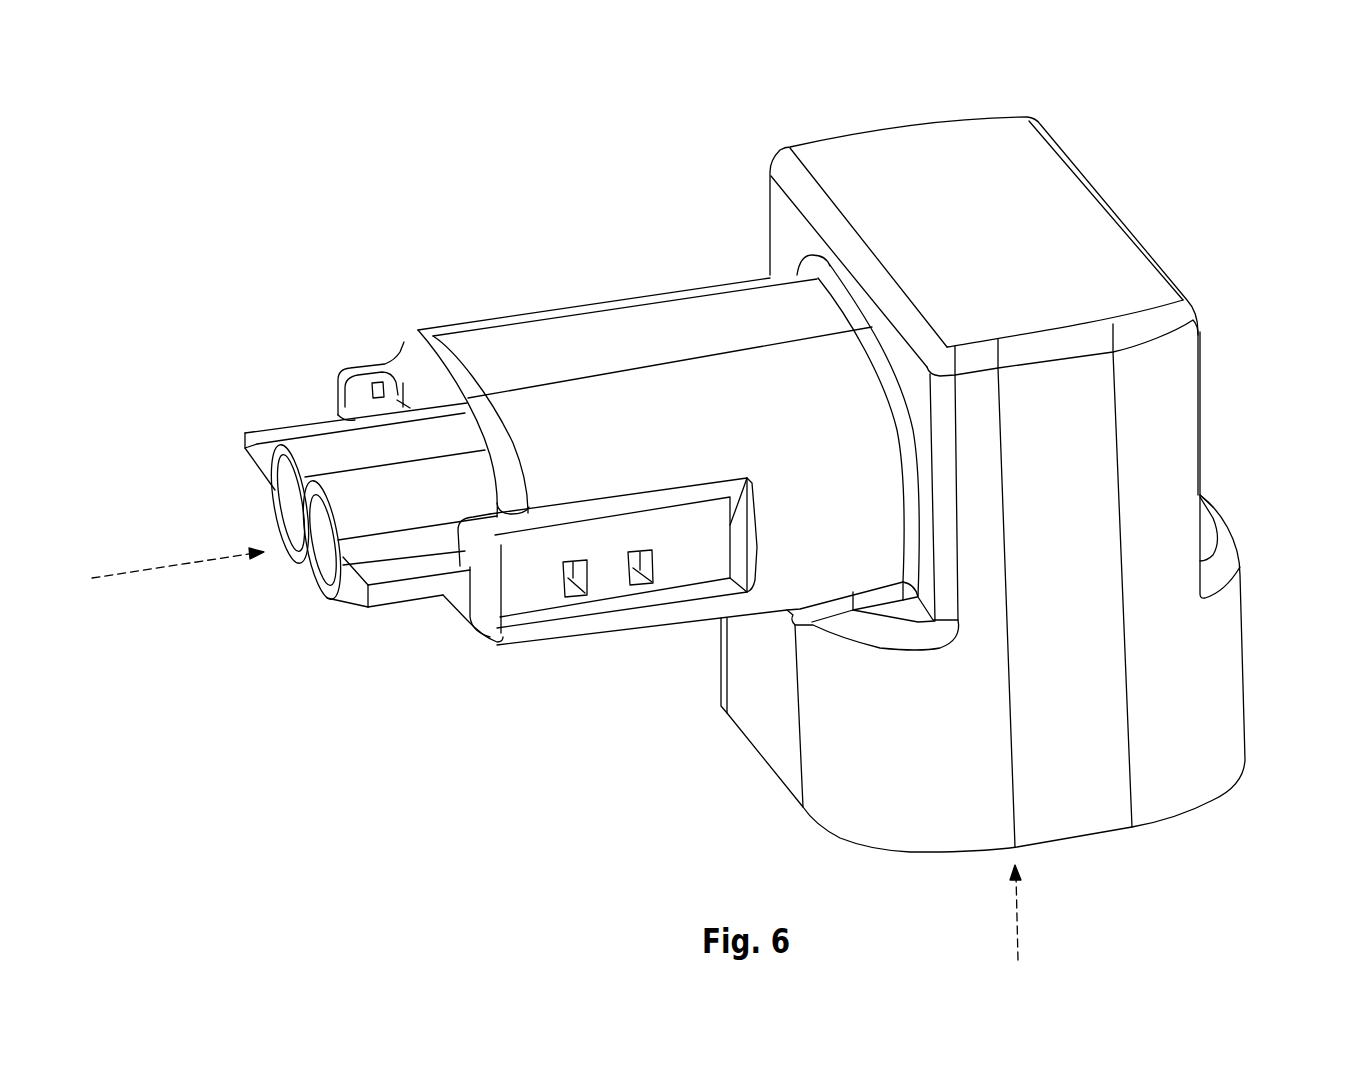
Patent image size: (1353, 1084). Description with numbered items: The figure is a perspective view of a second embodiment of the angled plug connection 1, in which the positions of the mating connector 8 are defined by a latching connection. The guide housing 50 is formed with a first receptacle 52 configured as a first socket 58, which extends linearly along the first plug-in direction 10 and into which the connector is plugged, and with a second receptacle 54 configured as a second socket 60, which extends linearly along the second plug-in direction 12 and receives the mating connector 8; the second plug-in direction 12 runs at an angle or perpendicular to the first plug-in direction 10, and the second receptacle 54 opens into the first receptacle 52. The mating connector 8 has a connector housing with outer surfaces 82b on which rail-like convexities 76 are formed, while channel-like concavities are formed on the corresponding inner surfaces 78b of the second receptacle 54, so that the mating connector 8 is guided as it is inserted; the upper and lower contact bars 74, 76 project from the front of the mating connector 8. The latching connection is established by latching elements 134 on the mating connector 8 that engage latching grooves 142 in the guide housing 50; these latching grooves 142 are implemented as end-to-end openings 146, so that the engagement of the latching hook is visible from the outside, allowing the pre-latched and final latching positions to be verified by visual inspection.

The angled plug connection 1 is at (1230, 83).
The guide housing 50 is at (1133, 146).
The first receptacle 52 is at (1264, 686).
The first socket 58 is at (1206, 501).
The mating connector 8 is at (278, 391).
The contact bar 74 is at (306, 528).
The rail-like convexity 76 is at (263, 432).
The second receptacle 54 is at (377, 565).
The second socket 60 is at (318, 612).
The inner surface 78b is at (416, 360).
The outer surface 82b is at (418, 513).
The latching element 134 is at (621, 678).
The latching groove 142 is at (608, 573).
The end-to-end opening 146 is at (648, 583).
The second plug-in direction 12 is at (107, 575).
The first plug-in direction 10 is at (1018, 927).